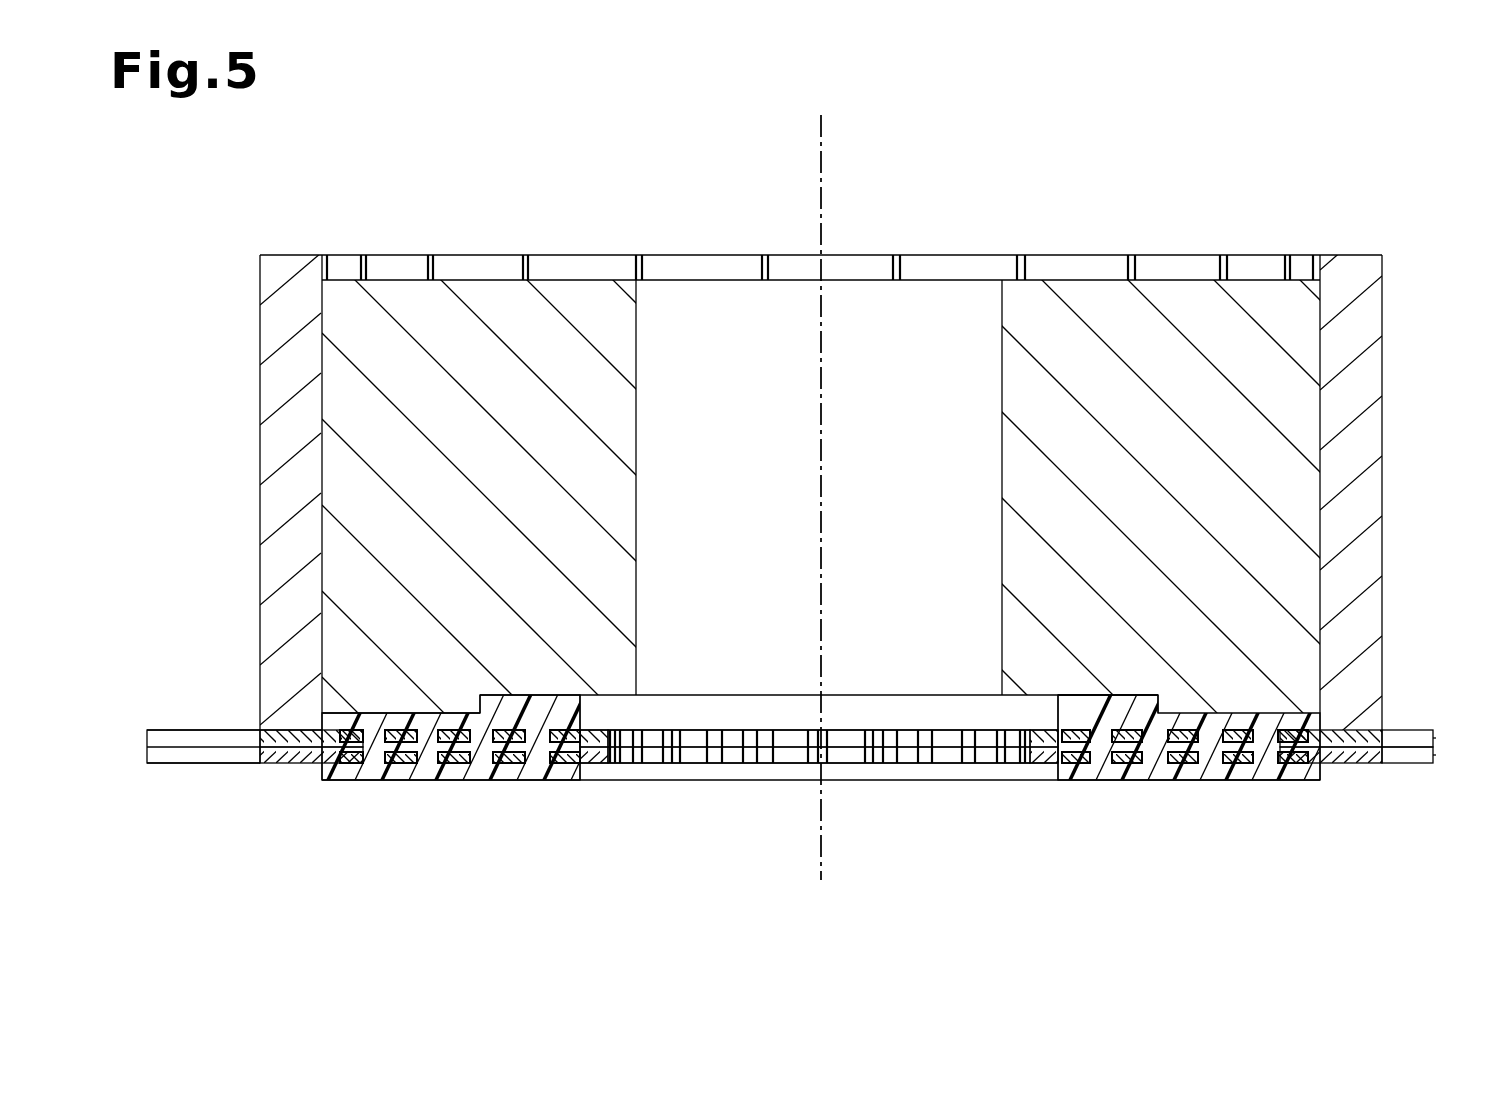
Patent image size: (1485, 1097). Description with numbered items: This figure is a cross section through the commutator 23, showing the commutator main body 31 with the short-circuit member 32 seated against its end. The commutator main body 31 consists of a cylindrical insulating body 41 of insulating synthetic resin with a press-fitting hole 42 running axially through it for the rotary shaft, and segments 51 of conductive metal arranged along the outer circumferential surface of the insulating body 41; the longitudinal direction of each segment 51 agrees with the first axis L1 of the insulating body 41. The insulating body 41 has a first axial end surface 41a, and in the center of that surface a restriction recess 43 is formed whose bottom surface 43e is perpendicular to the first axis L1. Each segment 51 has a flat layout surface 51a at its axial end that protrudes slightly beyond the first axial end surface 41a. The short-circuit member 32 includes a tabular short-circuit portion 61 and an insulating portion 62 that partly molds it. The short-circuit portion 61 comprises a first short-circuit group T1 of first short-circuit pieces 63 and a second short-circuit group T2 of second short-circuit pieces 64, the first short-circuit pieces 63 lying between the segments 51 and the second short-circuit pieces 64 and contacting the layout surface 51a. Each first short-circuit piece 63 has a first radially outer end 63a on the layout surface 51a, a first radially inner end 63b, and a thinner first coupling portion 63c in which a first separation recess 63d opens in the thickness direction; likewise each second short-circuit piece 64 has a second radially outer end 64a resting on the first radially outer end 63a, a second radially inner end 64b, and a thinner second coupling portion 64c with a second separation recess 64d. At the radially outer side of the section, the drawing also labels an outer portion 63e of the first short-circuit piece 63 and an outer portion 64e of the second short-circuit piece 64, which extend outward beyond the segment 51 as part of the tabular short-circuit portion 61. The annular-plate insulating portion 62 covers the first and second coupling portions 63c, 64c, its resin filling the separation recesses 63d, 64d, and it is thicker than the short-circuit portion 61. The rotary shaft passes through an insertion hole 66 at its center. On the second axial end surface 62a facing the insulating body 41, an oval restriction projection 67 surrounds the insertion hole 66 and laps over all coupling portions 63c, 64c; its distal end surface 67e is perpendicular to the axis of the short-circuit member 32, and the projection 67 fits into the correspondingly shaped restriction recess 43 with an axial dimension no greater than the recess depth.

The commutator 23 is at (1214, 130).
The commutator main body 31 is at (1063, 252).
The short-circuit member 32 is at (763, 784).
The insulating body 41 is at (495, 292).
The first axial end surface 41a is at (1220, 764).
The press-fitting hole 42 is at (1008, 386).
The restriction recess 43 is at (819, 712).
The bottom surface 43e is at (740, 700).
The segment 51 is at (262, 388).
The layout surface 51a is at (298, 764).
The short-circuit portion 61 is at (199, 745).
The insulating portion 62 is at (466, 749).
The second axial end surface 62a is at (393, 712).
The first short-circuit piece 63 is at (1410, 730).
The first radially outer end 63a is at (300, 730).
The first radially inner end 63b is at (604, 722).
The first coupling portion 63c is at (445, 728).
The first separation recess 63d is at (1263, 728).
The first electrode lead portion 63e is at (222, 735).
The second short-circuit piece 64 is at (1404, 764).
The second radially outer end 64a is at (268, 764).
The second radially inner end 64b is at (607, 764).
The second coupling portion 64c is at (398, 766).
The second separation recess 64d is at (1093, 765).
The second electrode lead portion 64e is at (167, 763).
The insertion hole 66 is at (582, 772).
The restriction projection 67 is at (1202, 724).
The distal end surface 67e is at (1088, 694).
The first short-circuit group T1 is at (1436, 738).
The second short-circuit group T2 is at (1436, 755).
The first axis L1 is at (822, 150).